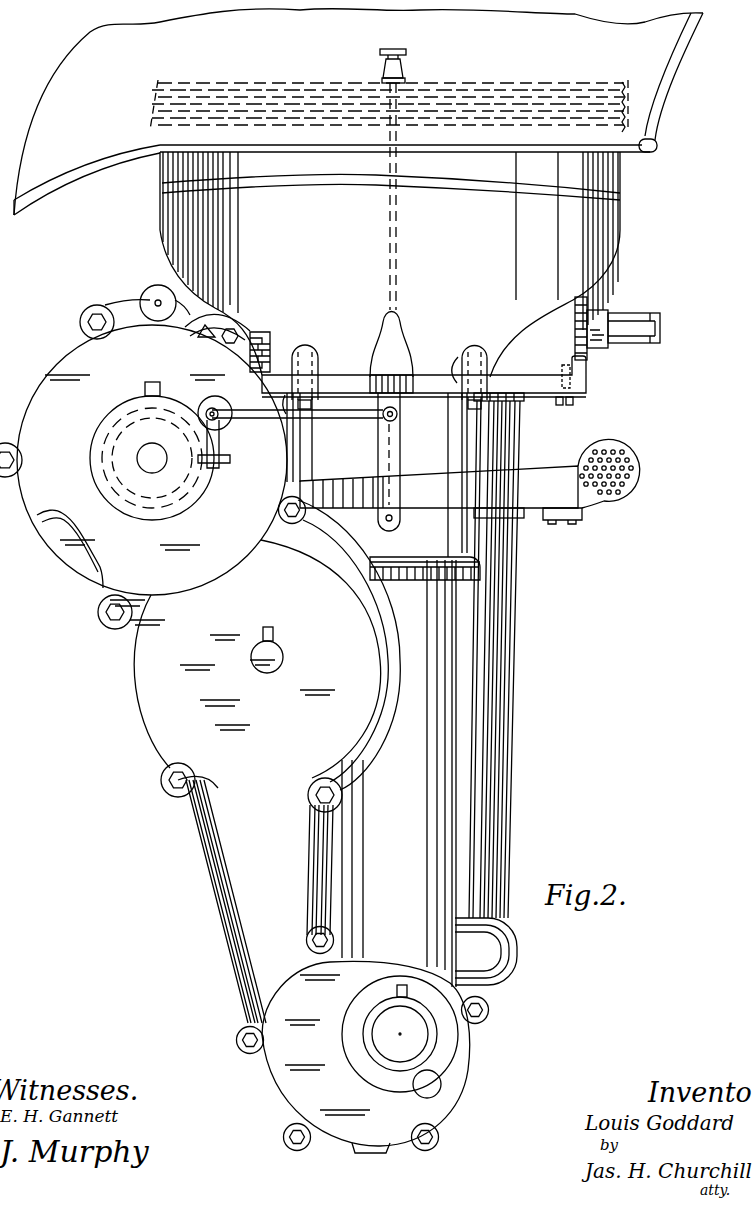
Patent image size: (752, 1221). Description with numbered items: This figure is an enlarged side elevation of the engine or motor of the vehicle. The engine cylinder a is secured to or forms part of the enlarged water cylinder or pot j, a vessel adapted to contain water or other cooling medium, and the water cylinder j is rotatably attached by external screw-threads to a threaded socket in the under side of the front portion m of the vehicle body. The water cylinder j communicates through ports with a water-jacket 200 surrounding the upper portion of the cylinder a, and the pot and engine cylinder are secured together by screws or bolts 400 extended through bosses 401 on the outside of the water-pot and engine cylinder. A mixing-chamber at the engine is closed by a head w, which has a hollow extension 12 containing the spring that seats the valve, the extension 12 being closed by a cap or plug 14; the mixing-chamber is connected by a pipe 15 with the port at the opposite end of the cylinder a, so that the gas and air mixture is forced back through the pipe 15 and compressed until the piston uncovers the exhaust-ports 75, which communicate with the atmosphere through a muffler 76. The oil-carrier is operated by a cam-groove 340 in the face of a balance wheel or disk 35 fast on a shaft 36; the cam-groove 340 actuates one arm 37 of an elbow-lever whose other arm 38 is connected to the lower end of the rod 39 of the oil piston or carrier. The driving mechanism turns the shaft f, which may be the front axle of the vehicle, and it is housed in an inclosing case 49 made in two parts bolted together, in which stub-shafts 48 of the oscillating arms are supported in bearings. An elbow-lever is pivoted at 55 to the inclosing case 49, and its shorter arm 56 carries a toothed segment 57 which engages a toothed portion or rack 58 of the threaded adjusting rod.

The front portion of the vehicle body m is at (668, 88).
The water cylinder or pot j is at (616, 177).
The head for the mixing-chamber w is at (576, 297).
The hollow extension 12 is at (632, 315).
The cap or plug 14 is at (660, 340).
The inclosing case 49 is at (118, 307).
The pivot 55 is at (158, 303).
The shorter arm 56 is at (227, 317).
The toothed segment 57 is at (242, 322).
The toothed portion or rack 58 is at (270, 352).
The bosses 401 is at (318, 357).
The screws or bolts 400 is at (310, 408).
The piston-rod of the oil carrier 39 is at (396, 403).
The arm of the elbow-lever 38 is at (333, 417).
The pipe 15 is at (521, 443).
The muffler 76 is at (638, 470).
The exhaust-ports 75 is at (450, 484).
The water-jacket 200 is at (500, 543).
The cam-groove 340 is at (115, 415).
The arm of the elbow-lever 37 is at (220, 445).
The shaft 36 is at (147, 463).
The balance wheel or disk 35 is at (72, 537).
The stub-shafts 48 is at (273, 663).
The cylinder a is at (450, 717).
The shaft f is at (387, 1040).